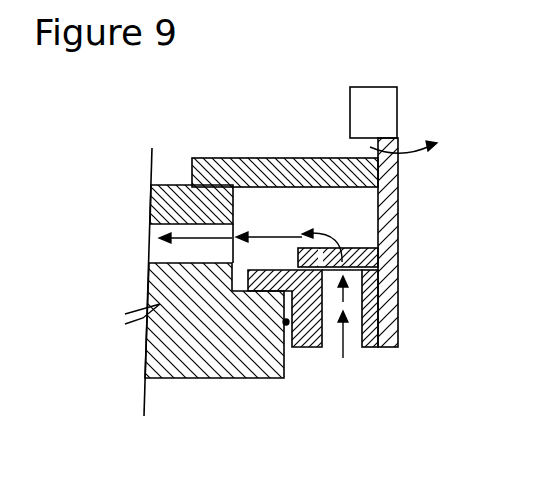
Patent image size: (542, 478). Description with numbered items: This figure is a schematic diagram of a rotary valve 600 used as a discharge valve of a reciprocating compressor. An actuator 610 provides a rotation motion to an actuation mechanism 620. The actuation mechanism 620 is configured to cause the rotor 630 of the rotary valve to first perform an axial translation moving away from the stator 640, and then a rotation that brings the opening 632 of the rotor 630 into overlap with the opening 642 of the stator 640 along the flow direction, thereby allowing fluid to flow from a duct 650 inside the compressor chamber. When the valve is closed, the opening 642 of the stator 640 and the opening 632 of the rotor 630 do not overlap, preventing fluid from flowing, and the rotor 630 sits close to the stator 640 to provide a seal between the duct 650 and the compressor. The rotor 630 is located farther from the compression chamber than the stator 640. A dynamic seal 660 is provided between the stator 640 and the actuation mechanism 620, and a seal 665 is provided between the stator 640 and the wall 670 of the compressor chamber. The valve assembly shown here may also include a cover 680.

The rotary valve 600 is at (432, 64).
The actuator 610 is at (383, 112).
The actuation mechanism 620 is at (388, 263).
The rotor 630 is at (320, 268).
The opening of the rotor 632 is at (353, 258).
The stator 640 is at (367, 348).
The opening of the stator 642 is at (350, 338).
The duct 650 is at (157, 237).
The dynamic seal 660 is at (388, 323).
The seal 665 is at (181, 351).
The wall of the compressor chamber 670 is at (146, 332).
The cover 680 is at (215, 158).